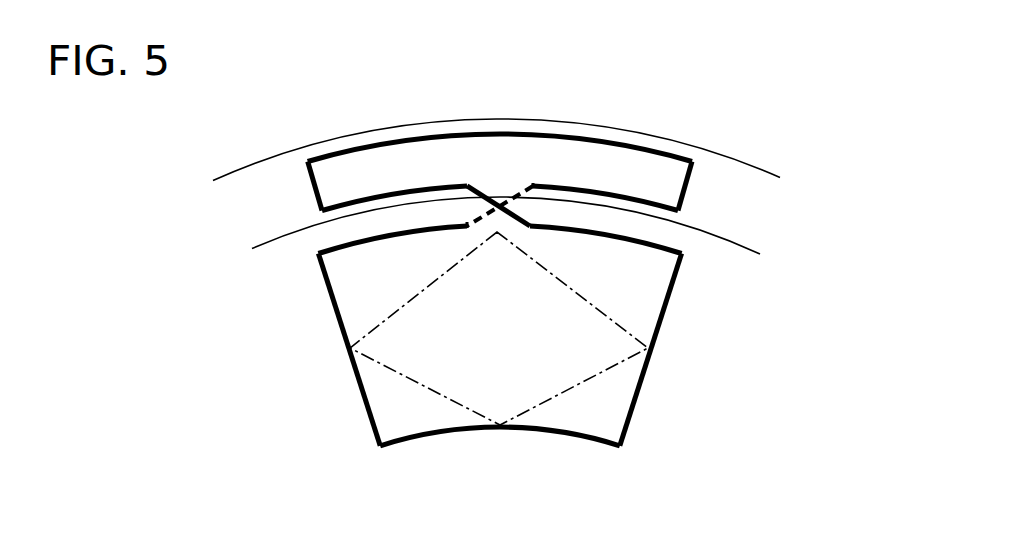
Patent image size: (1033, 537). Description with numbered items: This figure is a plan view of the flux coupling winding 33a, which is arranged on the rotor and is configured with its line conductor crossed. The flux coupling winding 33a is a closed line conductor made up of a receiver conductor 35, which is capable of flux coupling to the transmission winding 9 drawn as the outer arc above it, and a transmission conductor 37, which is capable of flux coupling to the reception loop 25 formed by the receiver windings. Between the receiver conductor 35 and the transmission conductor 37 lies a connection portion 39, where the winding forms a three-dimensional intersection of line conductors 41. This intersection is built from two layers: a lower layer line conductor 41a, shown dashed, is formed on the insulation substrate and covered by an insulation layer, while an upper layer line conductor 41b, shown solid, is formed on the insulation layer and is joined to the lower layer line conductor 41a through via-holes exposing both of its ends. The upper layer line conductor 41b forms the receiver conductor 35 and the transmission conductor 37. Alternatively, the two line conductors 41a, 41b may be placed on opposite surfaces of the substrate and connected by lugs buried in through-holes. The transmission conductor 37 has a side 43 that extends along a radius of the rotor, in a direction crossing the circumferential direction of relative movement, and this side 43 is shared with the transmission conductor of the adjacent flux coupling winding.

The transmission winding 9 is at (723, 152).
The reception loop 25 is at (610, 312).
The flux coupling winding 33a is at (720, 34).
The receiver conductor 35 is at (302, 197).
The transmission conductor 37 is at (466, 440).
The connection portion 39 is at (482, 213).
The line conductors 41 is at (539, 145).
The lower layer line conductor 41a is at (500, 242).
The upper layer line conductor 41b is at (503, 202).
The side 43 is at (640, 400).